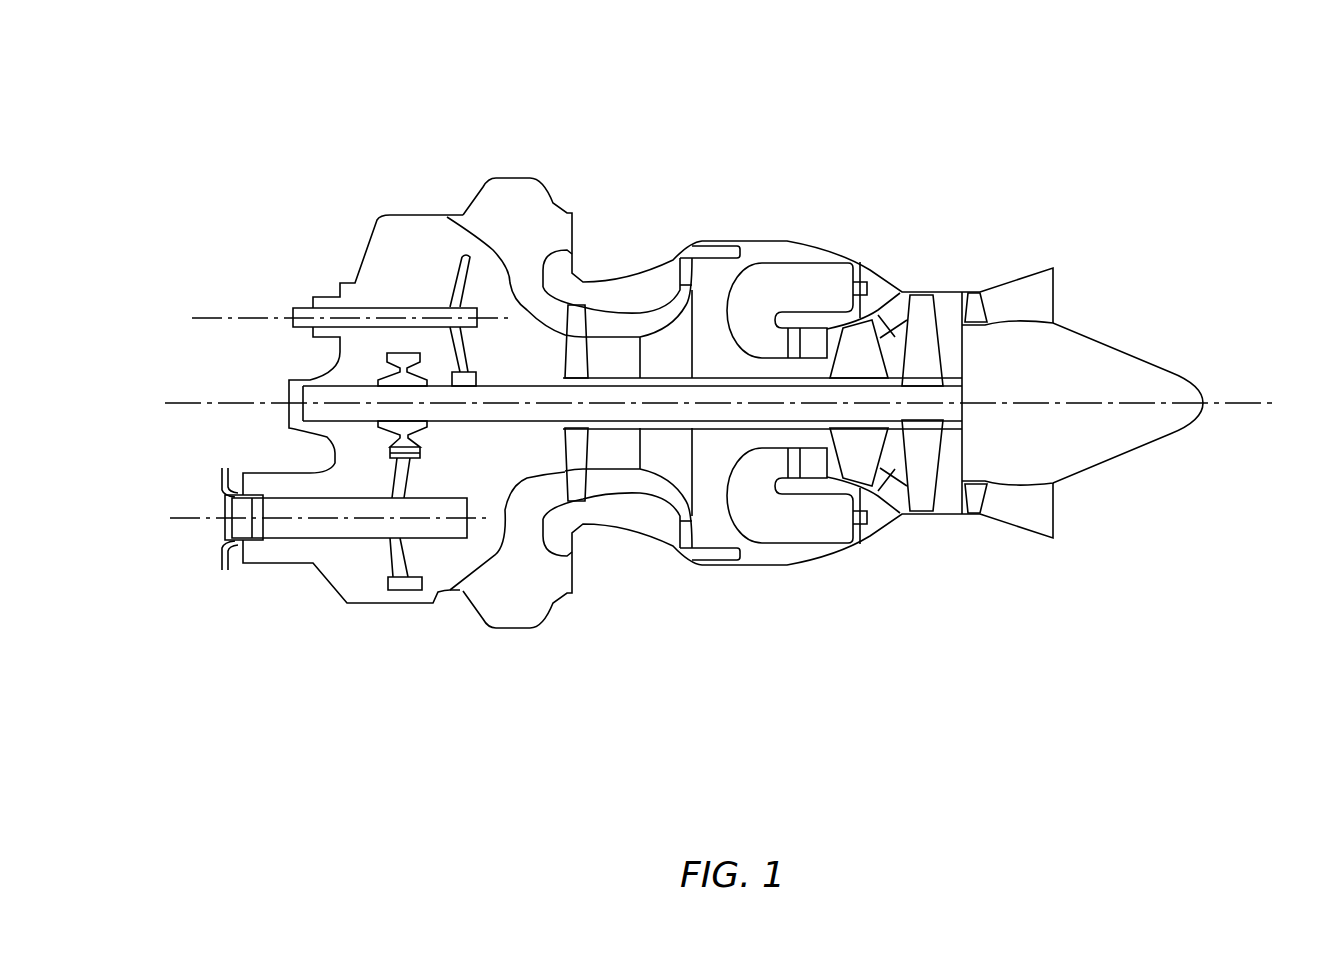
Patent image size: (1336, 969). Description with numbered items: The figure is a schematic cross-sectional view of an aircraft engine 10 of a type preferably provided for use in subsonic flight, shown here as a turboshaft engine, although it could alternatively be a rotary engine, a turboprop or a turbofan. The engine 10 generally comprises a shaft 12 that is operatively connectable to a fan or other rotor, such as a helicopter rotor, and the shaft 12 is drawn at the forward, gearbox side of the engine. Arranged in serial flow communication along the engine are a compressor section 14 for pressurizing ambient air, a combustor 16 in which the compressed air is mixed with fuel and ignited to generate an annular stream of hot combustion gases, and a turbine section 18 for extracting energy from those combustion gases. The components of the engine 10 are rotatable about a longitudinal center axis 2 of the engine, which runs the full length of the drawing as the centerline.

The aircraft engine 10 is at (233, 88).
The shaft 12 is at (293, 530).
The compressor section 14 is at (626, 237).
The combustor 16 is at (809, 237).
The turbine section 18 is at (929, 270).
The longitudinal center axis 2 is at (1265, 403).